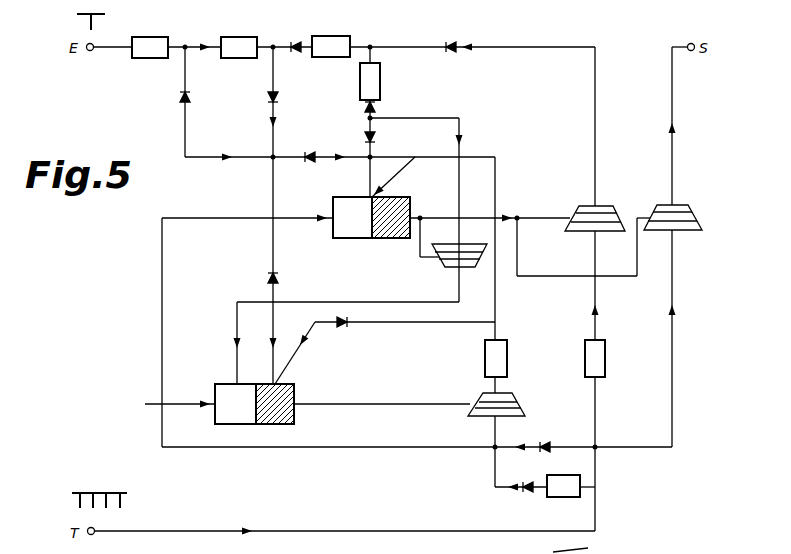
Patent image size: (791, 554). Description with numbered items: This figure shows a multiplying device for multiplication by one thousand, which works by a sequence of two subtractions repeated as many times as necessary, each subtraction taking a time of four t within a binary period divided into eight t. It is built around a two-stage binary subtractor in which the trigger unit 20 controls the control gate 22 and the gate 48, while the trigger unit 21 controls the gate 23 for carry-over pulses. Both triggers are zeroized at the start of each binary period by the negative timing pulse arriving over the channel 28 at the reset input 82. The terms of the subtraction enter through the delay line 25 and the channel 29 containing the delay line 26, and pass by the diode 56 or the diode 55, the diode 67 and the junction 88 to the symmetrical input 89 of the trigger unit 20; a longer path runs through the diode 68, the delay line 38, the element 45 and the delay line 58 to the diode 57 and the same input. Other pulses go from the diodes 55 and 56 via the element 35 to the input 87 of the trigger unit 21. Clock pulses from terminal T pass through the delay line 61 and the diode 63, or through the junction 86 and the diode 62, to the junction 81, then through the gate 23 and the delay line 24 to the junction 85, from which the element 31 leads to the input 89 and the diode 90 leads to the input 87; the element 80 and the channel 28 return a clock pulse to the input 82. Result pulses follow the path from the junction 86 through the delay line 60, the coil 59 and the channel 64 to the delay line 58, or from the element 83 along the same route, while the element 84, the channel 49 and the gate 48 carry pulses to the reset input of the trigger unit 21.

The trigger unit 20 is at (353, 239).
The trigger unit 21 is at (221, 384).
The control gate 22 is at (682, 209).
The gate 23 is at (514, 397).
The delay line 24 is at (508, 366).
The delay line 25 is at (152, 37).
The delay line 26 is at (232, 37).
The channel 28 is at (164, 281).
The channel 29 is at (270, 113).
The path element 31 is at (497, 179).
The path element 35 is at (271, 190).
The delay line 38 is at (343, 36).
The path element 45 is at (374, 55).
The gate 48 is at (453, 252).
The channel 49 is at (461, 118).
The diode 55 is at (279, 97).
The diode 56 is at (180, 98).
The diode 57 is at (376, 138).
The delay line 58 is at (381, 89).
The gate coil 59 is at (582, 209).
The delay line 60 is at (606, 366).
The delay line 61 is at (571, 498).
The diode 62 is at (548, 443).
The diode 63 is at (521, 498).
The channel 64 is at (490, 47).
The diode 67 is at (312, 153).
The diode 68 is at (296, 41).
The path element 80 is at (166, 405).
The junction 81 is at (495, 448).
The reset input 82 is at (323, 232).
The path element 83 is at (597, 337).
The path element 84 is at (366, 118).
The junction 85 is at (497, 322).
The junction 86 is at (597, 449).
The input 87 is at (289, 384).
The junction 88 is at (373, 158).
The symmetrical input 89 is at (369, 196).
The diode 90 is at (394, 325).